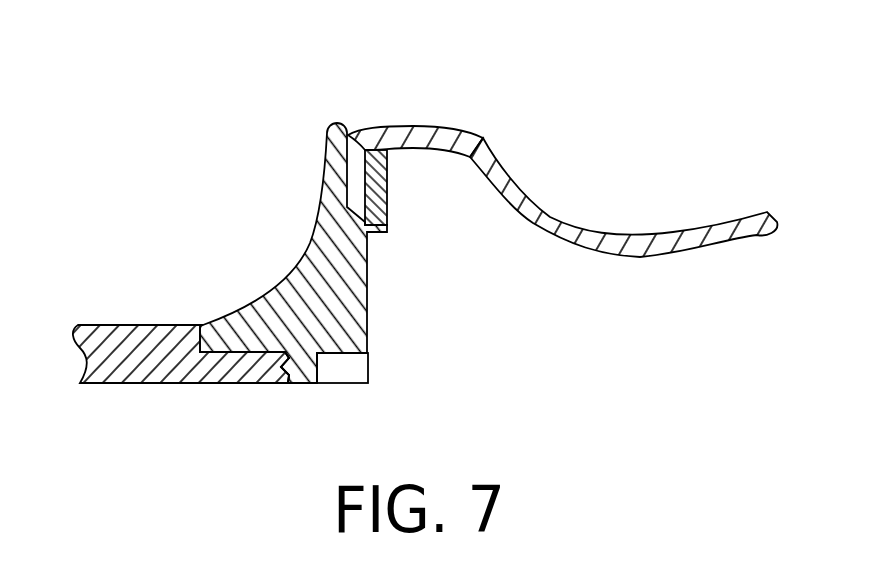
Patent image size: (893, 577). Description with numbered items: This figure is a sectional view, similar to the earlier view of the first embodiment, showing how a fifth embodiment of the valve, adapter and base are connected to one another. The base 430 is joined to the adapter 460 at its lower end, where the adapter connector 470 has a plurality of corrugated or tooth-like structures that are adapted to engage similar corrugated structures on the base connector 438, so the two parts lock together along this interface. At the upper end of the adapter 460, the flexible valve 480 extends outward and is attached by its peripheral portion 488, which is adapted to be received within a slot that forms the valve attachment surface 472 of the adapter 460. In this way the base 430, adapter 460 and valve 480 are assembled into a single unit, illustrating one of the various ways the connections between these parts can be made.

The base 430 is at (120, 383).
The base connector 438 is at (287, 383).
The adapter 460 is at (280, 273).
The adapter connector 470 is at (303, 383).
The valve attachment surface 472 is at (387, 220).
The valve 480 is at (637, 235).
The peripheral portion 488 is at (377, 136).